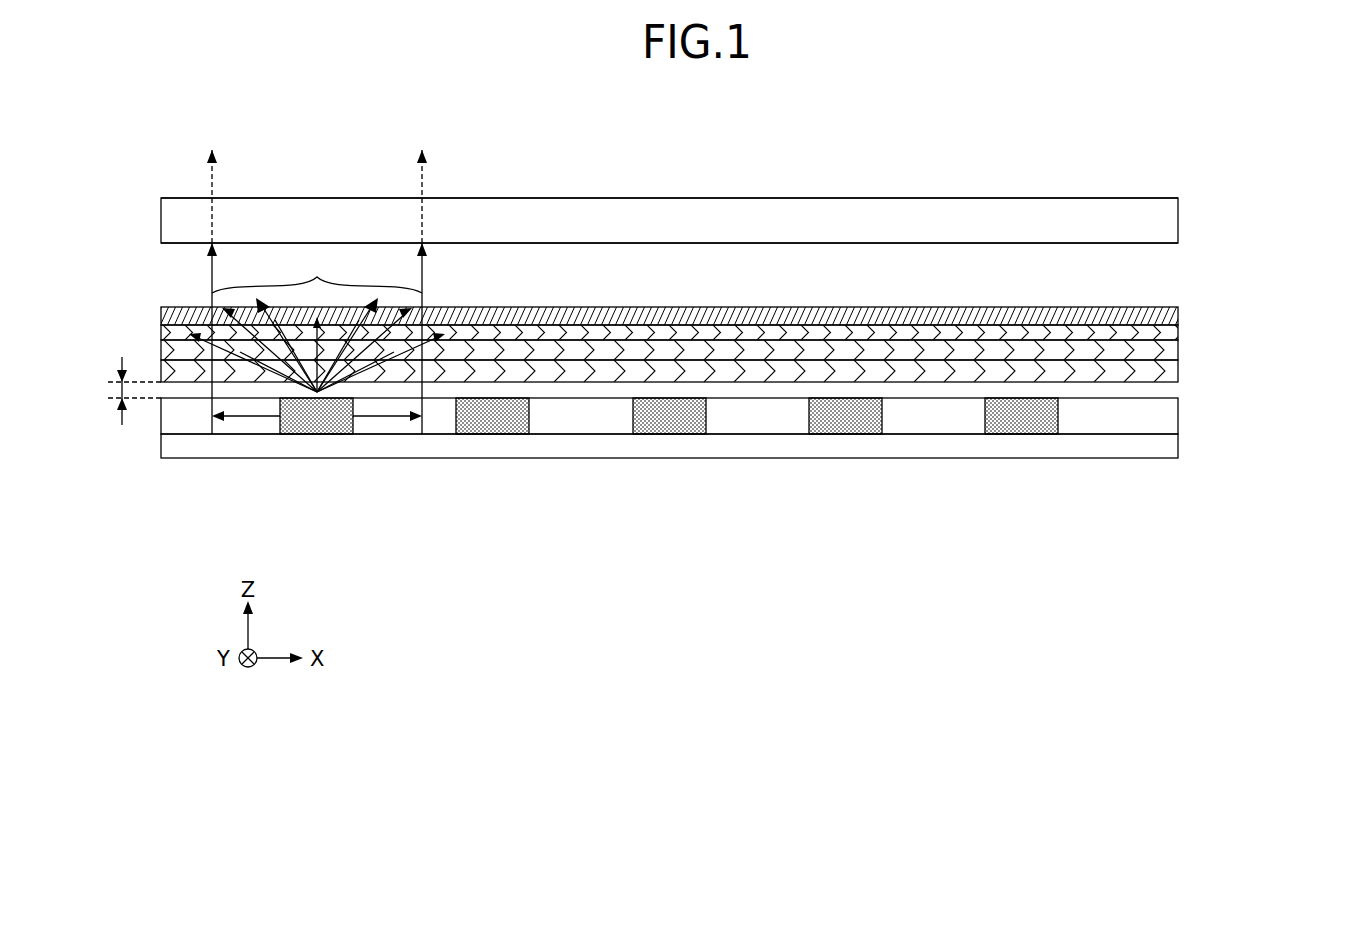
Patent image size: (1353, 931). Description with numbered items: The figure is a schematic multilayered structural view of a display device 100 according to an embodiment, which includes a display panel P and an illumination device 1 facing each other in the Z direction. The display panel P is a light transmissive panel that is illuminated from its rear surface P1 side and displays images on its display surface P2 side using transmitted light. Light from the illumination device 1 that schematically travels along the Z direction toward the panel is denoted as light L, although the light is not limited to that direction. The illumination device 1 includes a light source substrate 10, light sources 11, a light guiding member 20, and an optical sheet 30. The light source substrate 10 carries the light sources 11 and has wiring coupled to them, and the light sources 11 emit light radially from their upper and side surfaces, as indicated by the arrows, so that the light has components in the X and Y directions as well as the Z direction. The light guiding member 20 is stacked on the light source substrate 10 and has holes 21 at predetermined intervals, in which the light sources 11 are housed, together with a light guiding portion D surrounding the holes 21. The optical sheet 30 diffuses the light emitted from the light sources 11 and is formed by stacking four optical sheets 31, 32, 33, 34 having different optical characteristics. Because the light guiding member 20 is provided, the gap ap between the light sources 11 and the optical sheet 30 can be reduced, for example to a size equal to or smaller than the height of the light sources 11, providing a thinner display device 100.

The display device 100 is at (912, 142).
The illumination device 1 is at (132, 297).
The display panel P is at (1172, 220).
The rear surface P1 is at (1155, 243).
The display surface P2 is at (1160, 198).
The optical sheet 30 is at (738, 343).
The optical sheet 31 is at (708, 376).
The optical sheet 32 is at (1176, 352).
The optical sheet 33 is at (1176, 337).
The optical sheet 34 is at (1176, 321).
The light guiding member 20 is at (1170, 413).
The holes 21 is at (346, 430).
The light source substrate 10 is at (1170, 446).
The light sources 11 is at (311, 440).
The light guiding portion D is at (212, 452).
The light L is at (317, 272).
The gap ap is at (112, 393).